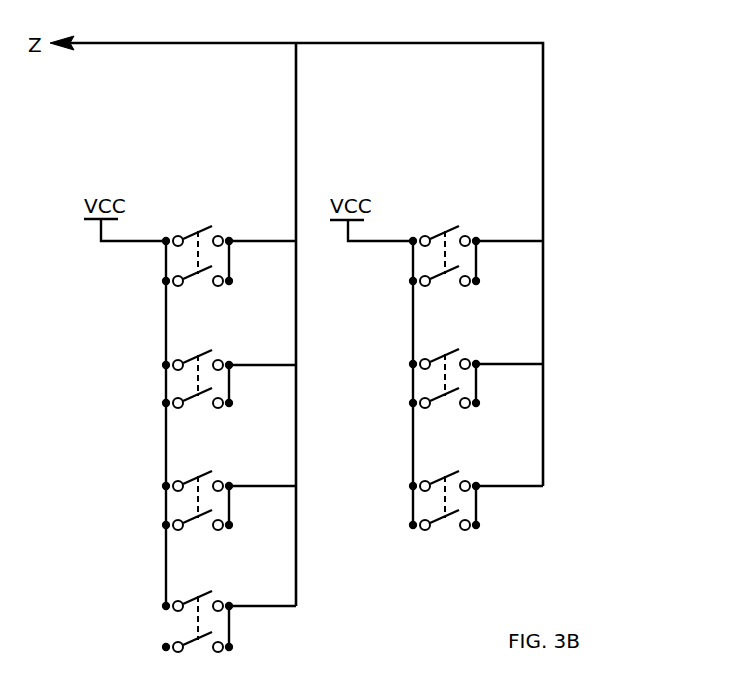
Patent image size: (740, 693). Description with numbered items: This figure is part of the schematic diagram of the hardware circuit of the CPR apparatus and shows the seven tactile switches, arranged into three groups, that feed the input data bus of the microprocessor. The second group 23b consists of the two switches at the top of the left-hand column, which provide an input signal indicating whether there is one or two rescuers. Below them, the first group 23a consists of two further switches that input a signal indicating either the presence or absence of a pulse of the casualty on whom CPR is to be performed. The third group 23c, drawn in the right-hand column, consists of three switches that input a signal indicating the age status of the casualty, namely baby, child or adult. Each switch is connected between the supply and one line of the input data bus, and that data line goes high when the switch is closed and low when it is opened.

The first group of switches 23a is at (150, 593).
The second group of switches 23b is at (150, 388).
The third group of switches 23c is at (502, 507).